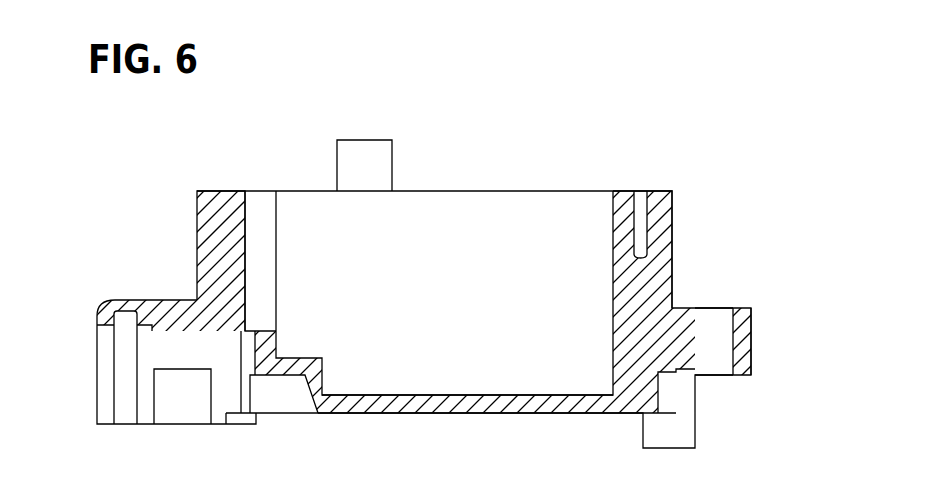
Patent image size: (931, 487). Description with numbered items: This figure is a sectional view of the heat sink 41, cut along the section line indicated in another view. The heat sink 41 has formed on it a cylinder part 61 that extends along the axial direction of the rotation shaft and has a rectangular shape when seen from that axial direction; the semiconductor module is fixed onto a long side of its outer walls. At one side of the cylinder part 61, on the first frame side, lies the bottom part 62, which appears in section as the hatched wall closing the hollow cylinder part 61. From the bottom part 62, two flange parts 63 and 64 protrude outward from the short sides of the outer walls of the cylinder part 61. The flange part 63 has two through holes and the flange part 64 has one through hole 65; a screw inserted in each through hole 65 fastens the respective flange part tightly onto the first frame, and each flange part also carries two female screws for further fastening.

The heat sink 41 is at (219, 190).
The cylinder part 61 is at (218, 232).
The bottom part 62 is at (632, 343).
The flange part 63 is at (122, 303).
The flange part 64 is at (742, 345).
The through hole 65 is at (722, 320).